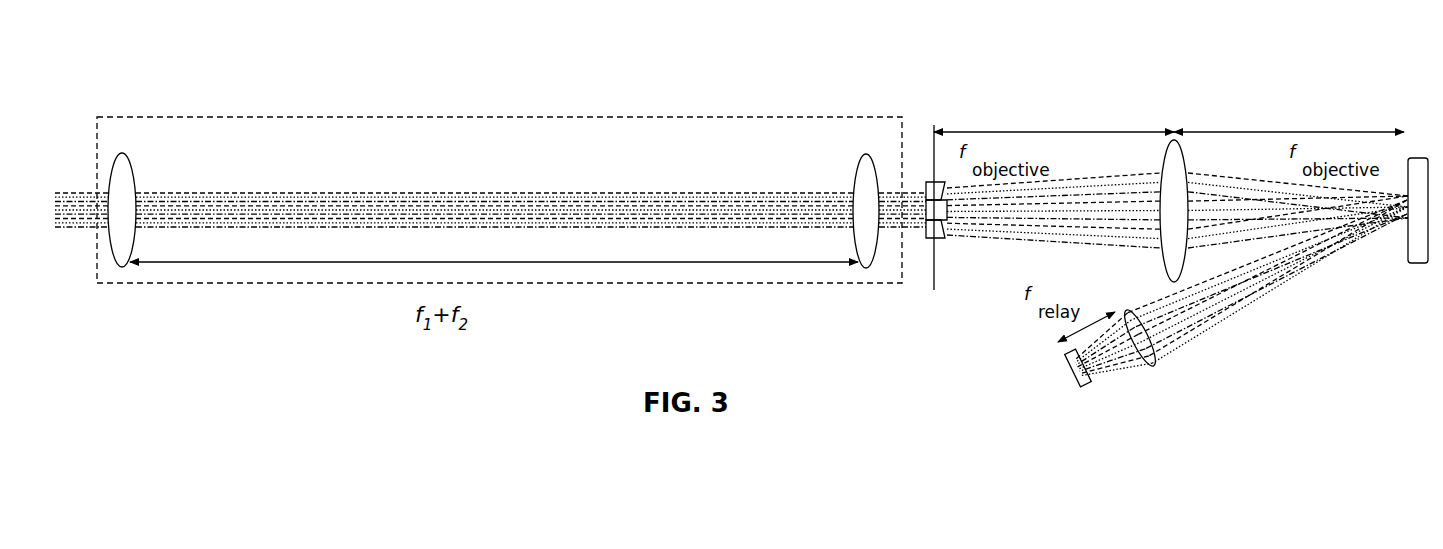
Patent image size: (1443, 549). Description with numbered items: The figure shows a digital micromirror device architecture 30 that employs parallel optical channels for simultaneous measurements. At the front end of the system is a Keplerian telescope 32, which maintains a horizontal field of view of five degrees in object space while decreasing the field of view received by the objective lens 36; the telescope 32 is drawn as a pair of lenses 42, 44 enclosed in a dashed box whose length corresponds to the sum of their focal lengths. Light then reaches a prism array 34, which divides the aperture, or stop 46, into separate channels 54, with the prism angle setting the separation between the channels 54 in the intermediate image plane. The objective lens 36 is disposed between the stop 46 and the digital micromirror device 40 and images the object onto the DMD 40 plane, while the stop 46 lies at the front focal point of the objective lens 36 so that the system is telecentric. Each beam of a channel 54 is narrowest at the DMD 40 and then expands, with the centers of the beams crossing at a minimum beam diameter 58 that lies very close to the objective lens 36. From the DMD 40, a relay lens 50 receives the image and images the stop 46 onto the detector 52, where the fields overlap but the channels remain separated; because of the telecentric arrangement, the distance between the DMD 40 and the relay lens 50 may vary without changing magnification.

The digital micromirror device architecture 30 is at (647, 54).
The Keplerian telescope 32 is at (505, 117).
The prism array 34 is at (932, 177).
The objective lens 36 is at (1184, 156).
The digital micromirror device 40 is at (1418, 157).
The first lens 42 is at (122, 153).
The second lens 44 is at (866, 153).
The stop 46 is at (936, 140).
The relay lens 50 is at (1150, 366).
The detector 52 is at (1070, 366).
The channels 54 is at (1330, 260).
The minimum beam diameter 58 is at (1260, 292).